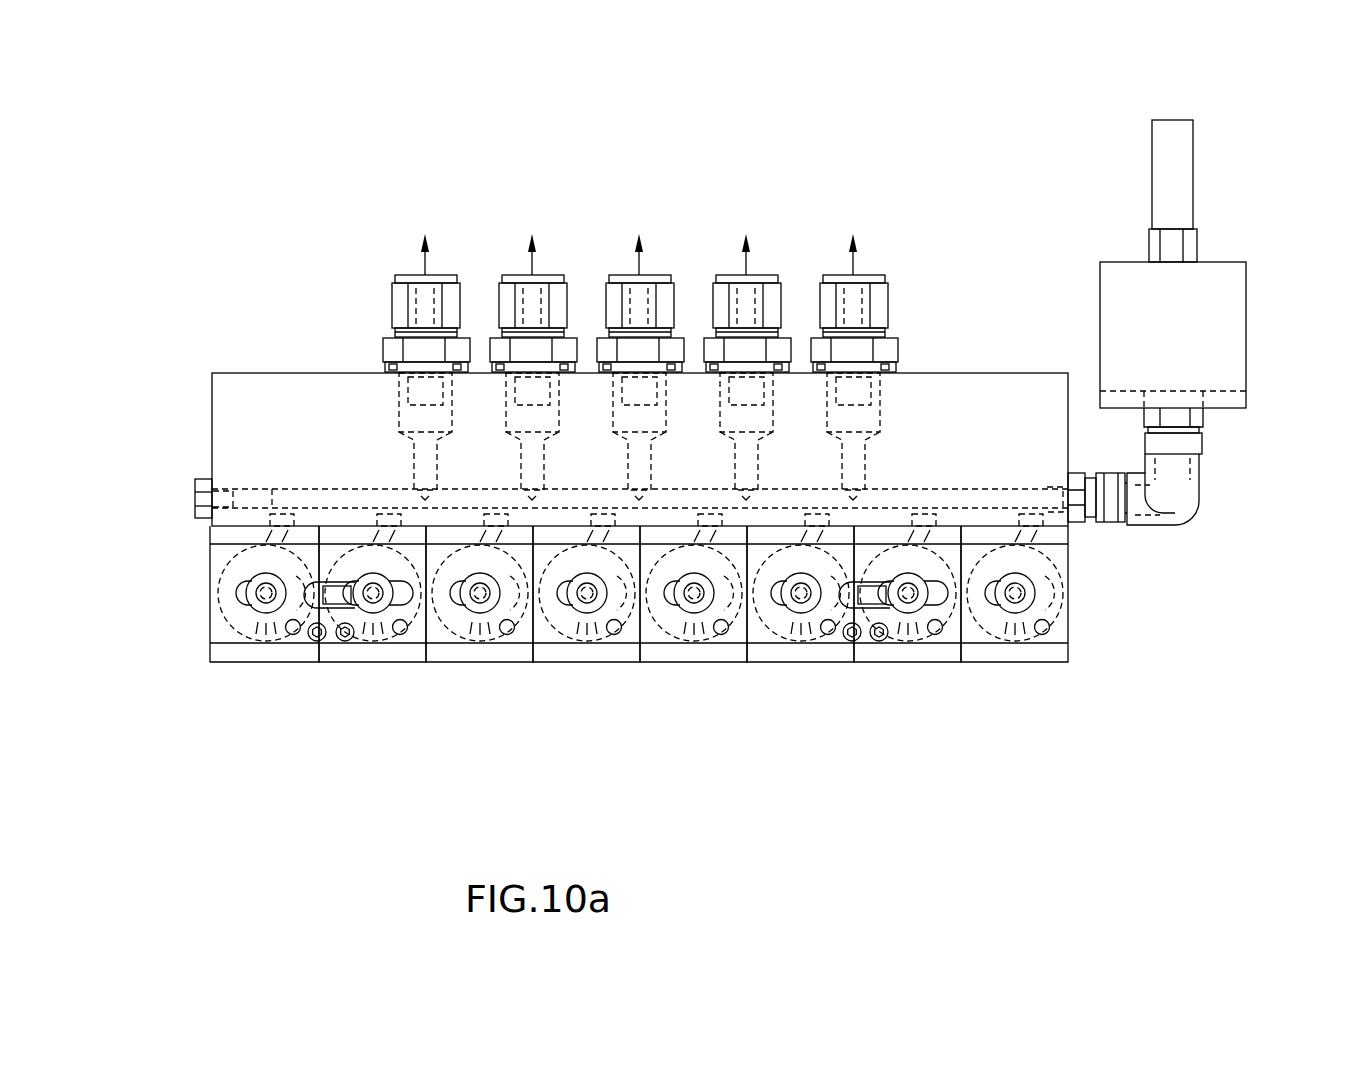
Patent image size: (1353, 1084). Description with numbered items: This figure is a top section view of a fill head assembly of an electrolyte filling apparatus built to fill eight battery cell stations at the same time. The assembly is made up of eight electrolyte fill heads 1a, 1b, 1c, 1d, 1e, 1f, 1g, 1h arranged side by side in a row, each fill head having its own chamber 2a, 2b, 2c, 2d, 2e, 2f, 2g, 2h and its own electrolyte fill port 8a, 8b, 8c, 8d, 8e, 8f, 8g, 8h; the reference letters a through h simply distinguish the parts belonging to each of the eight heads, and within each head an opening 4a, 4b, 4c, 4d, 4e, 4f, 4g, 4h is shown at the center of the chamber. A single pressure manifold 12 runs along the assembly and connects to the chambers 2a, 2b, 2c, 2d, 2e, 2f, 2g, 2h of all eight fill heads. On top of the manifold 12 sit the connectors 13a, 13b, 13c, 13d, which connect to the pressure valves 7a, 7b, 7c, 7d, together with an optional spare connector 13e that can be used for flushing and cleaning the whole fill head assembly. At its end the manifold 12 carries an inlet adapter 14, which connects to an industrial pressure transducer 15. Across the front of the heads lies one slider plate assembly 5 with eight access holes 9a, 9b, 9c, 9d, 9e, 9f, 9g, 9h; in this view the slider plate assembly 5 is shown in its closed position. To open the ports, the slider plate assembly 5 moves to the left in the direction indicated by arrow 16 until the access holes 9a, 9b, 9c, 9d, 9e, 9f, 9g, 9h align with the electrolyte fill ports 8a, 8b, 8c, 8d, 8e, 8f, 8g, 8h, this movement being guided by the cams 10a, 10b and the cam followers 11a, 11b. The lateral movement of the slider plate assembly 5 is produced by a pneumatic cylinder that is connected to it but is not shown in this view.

The electrolyte fill head 1a is at (217, 672).
The electrolyte fill head 1b is at (324, 672).
The electrolyte fill head 1c is at (431, 672).
The electrolyte fill head 1d is at (538, 672).
The electrolyte fill head 1e is at (645, 672).
The electrolyte fill head 1f is at (752, 672).
The electrolyte fill head 1g is at (859, 672).
The electrolyte fill head 1h is at (966, 672).
The chamber 2a is at (245, 570).
The chamber 2b is at (366, 562).
The chamber 2c is at (473, 562).
The chamber 2d is at (580, 562).
The chamber 2e is at (687, 562).
The chamber 2f is at (794, 562).
The chamber 2g is at (901, 562).
The chamber 2h is at (1008, 562).
The port opening 4a is at (263, 596).
The port opening 4b is at (375, 590).
The port opening 4c is at (482, 590).
The port opening 4d is at (589, 590).
The port opening 4e is at (696, 590).
The port opening 4f is at (803, 590).
The port opening 4g is at (910, 590).
The port opening 4h is at (1017, 590).
The slider plate assembly 5 is at (210, 632).
The pressure valve 7a is at (428, 219).
The pressure valve 7b is at (535, 219).
The pressure valve 7c is at (641, 219).
The pressure valve 7d is at (749, 219).
The electrolyte fill port 8a is at (258, 634).
The electrolyte fill port 8b is at (365, 634).
The electrolyte fill port 8c is at (472, 634).
The electrolyte fill port 8d is at (579, 634).
The electrolyte fill port 8e is at (686, 634).
The electrolyte fill port 8f is at (793, 634).
The electrolyte fill port 8g is at (900, 634).
The electrolyte fill port 8h is at (1007, 634).
The access hole 9a is at (293, 635).
The access hole 9b is at (400, 635).
The access hole 9c is at (507, 635).
The access hole 9d is at (614, 635).
The access hole 9e is at (721, 635).
The access hole 9f is at (828, 635).
The access hole 9g is at (935, 635).
The access hole 9h is at (1042, 635).
The cam 10a is at (345, 641).
The cam 10b is at (879, 641).
The cam follower 11a is at (339, 590).
The cam follower 11b is at (870, 586).
The pressure manifold 12 is at (263, 498).
The connector 13a is at (398, 310).
The connector 13b is at (505, 310).
The connector 13c is at (612, 310).
The connector 13d is at (719, 310).
The spare connector 13e is at (826, 310).
The inlet adapter 14 is at (1199, 508).
The pressure transducer 15 is at (1218, 333).
The arrow 16 is at (252, 553).